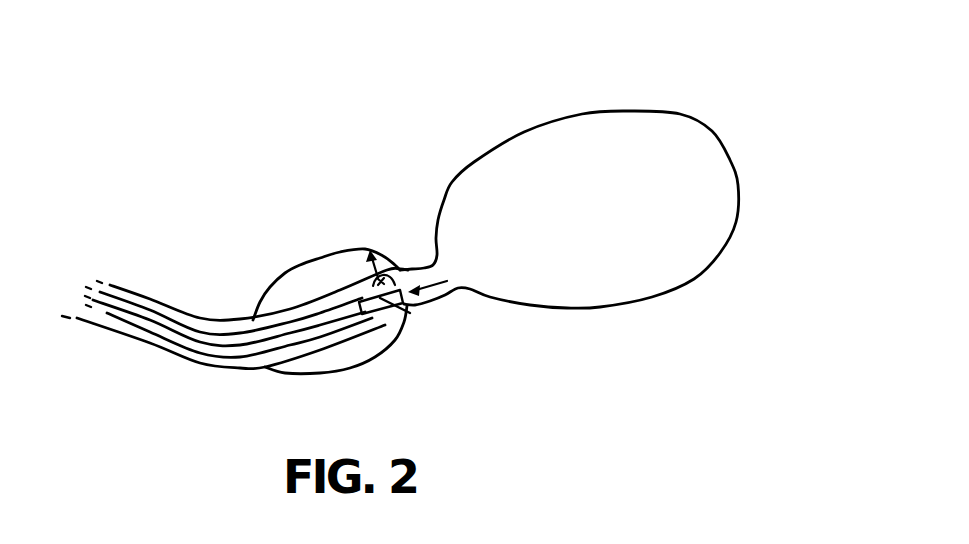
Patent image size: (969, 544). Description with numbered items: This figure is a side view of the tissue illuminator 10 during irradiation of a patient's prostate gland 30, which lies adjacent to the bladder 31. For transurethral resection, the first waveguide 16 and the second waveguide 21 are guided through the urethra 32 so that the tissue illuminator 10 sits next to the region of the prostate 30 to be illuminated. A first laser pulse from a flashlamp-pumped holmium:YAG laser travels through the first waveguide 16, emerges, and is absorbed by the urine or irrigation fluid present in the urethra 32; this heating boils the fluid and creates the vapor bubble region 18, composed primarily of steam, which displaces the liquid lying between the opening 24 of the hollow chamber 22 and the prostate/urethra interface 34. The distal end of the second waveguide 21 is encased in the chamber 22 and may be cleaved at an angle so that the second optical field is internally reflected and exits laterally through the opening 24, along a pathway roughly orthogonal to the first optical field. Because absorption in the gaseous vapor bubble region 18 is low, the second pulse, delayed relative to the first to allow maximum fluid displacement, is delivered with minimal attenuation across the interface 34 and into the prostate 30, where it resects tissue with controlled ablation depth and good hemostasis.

The tissue illuminator 10 is at (443, 284).
The first waveguide 16 is at (140, 304).
The vapor bubble region 18 is at (372, 247).
The second waveguide 21 is at (127, 317).
The hollow chamber 22 is at (410, 313).
The opening 24 is at (379, 298).
The prostate gland 30 is at (293, 278).
The bladder 31 is at (650, 123).
The urethra 32 is at (198, 312).
The prostate/urethra interface 34 is at (350, 287).